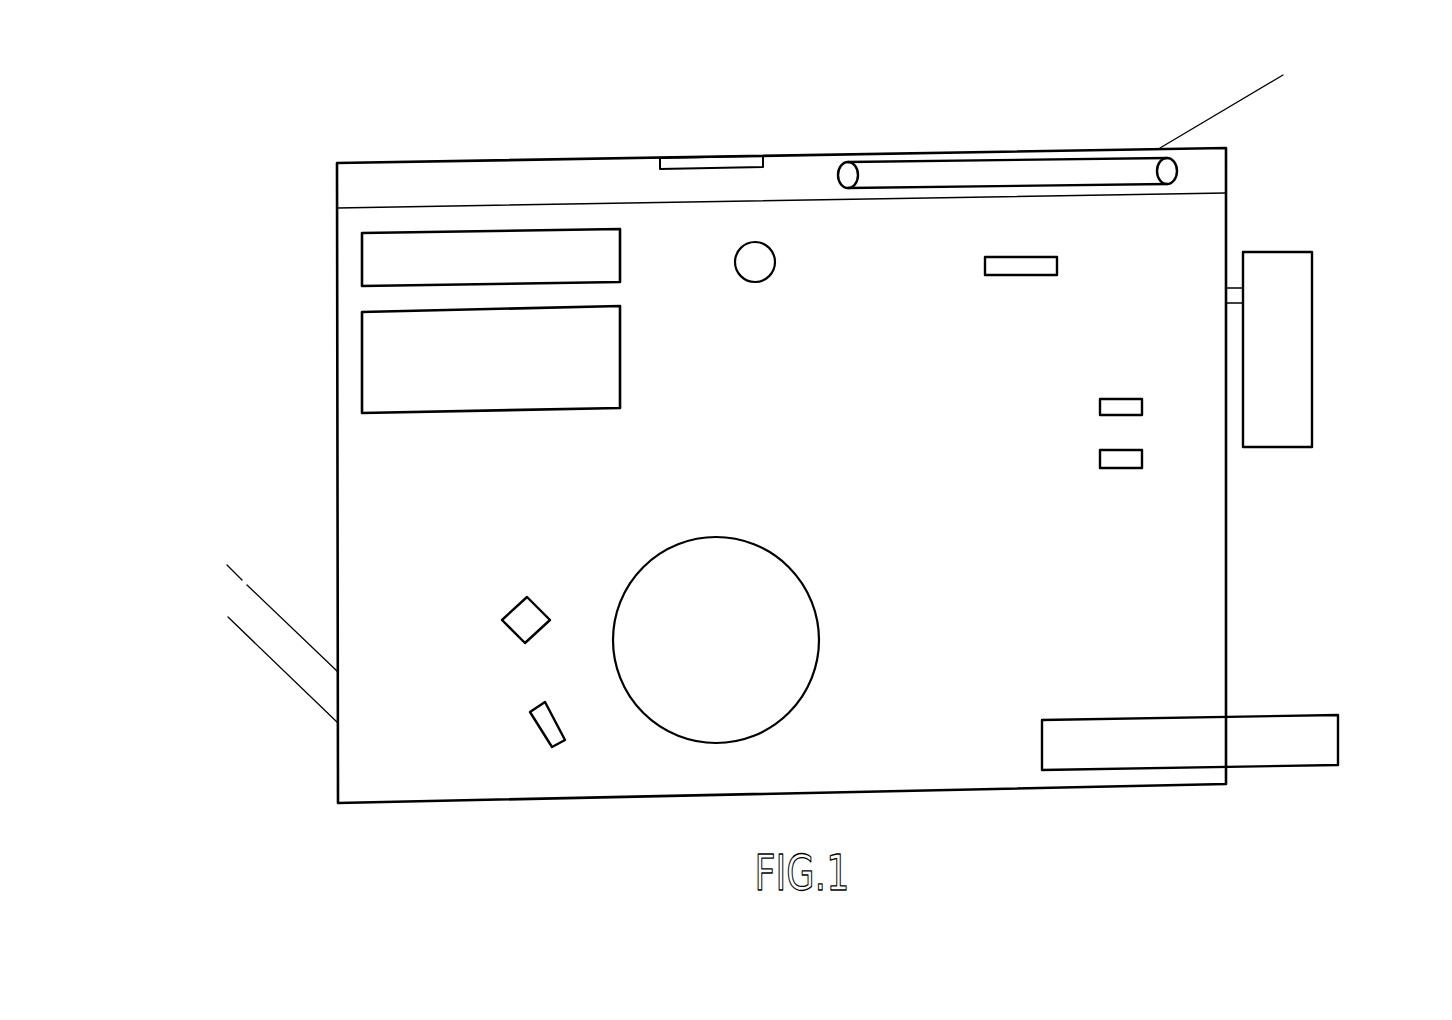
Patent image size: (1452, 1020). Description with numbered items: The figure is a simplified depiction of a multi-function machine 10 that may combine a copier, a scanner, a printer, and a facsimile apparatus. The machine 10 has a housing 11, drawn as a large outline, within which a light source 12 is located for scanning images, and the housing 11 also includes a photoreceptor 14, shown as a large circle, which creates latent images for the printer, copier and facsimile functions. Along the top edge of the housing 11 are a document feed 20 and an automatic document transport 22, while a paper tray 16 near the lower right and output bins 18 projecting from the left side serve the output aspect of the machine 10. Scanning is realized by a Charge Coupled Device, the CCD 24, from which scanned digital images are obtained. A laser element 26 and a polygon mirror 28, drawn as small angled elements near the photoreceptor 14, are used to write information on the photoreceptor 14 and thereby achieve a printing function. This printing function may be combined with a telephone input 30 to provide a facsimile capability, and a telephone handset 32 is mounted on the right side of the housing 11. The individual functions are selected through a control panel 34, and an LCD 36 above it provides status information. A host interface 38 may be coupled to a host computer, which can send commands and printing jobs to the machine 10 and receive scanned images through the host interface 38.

The multi-function machine 10 is at (393, 118).
The housing 11 is at (337, 333).
The light source 12 is at (775, 260).
The photoreceptor 14 is at (714, 537).
The paper tray 16 is at (1300, 732).
The output bins 18 is at (240, 630).
The document feed 20 is at (1258, 90).
The automatic document transport 22 is at (1138, 150).
The Charge Coupled Device (CCD) 24 is at (1022, 275).
The laser element 26 is at (555, 718).
The polygon mirror 28 is at (530, 618).
The telephone input 30 is at (1120, 399).
The telephone handset 32 is at (1312, 347).
The control panel 34 is at (600, 375).
The LCD 36 is at (618, 252).
The host interface 38 is at (1130, 468).